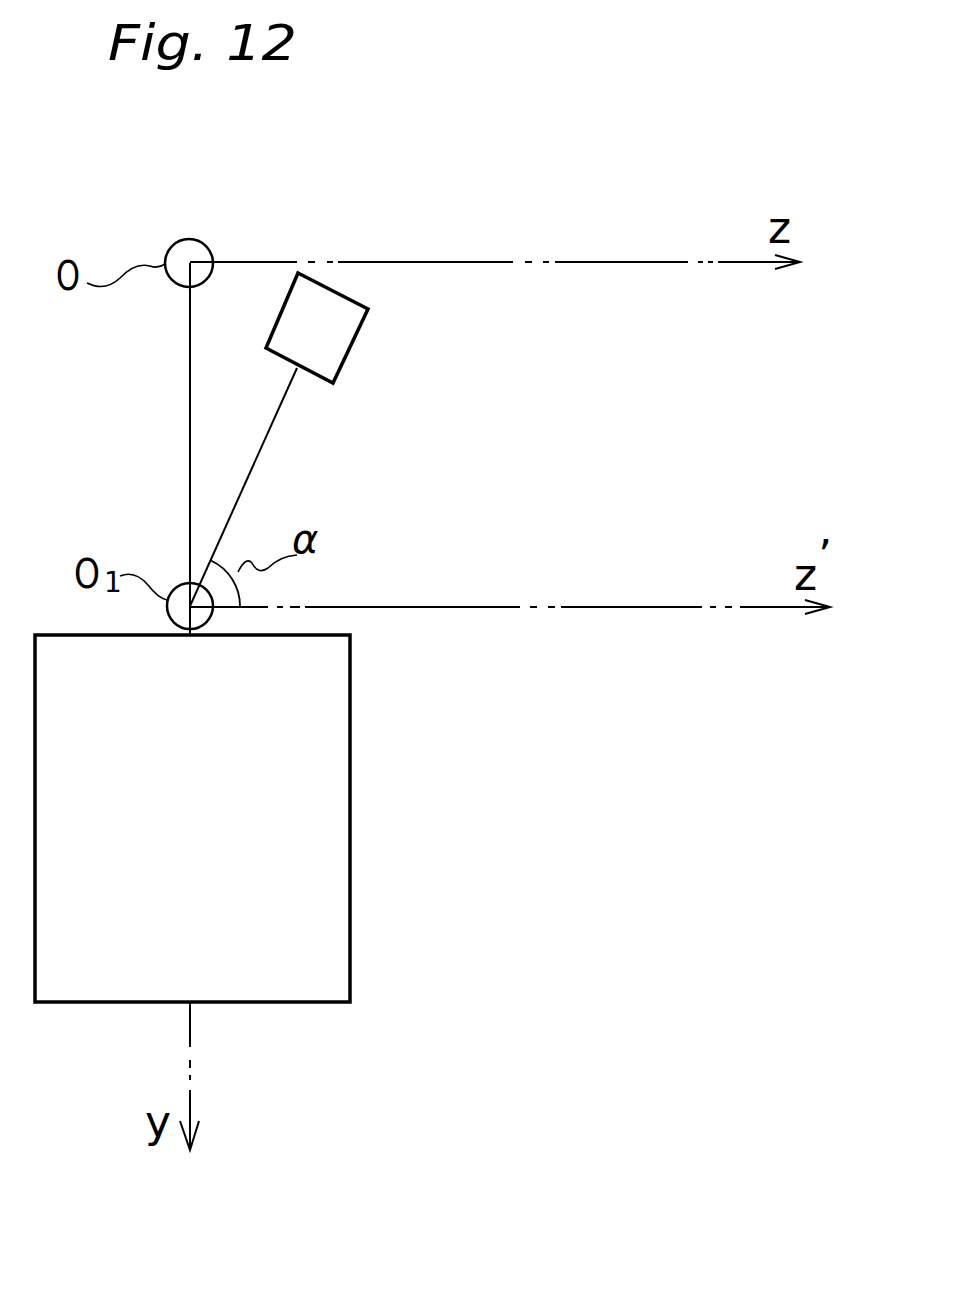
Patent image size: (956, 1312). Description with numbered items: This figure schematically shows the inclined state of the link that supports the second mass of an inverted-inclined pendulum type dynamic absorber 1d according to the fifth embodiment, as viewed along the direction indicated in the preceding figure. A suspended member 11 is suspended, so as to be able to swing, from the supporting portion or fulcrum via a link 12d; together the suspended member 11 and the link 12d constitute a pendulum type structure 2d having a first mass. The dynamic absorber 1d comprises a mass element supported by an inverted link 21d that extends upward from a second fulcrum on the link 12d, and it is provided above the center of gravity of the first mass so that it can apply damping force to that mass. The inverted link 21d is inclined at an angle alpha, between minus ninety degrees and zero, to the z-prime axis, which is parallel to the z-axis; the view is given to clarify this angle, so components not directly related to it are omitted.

The dynamic absorber 1d is at (339, 439).
The pendulum type structure 2d is at (308, 818).
The suspended member 11 is at (350, 827).
The link 12d is at (188, 410).
The inverted link 21d is at (255, 467).